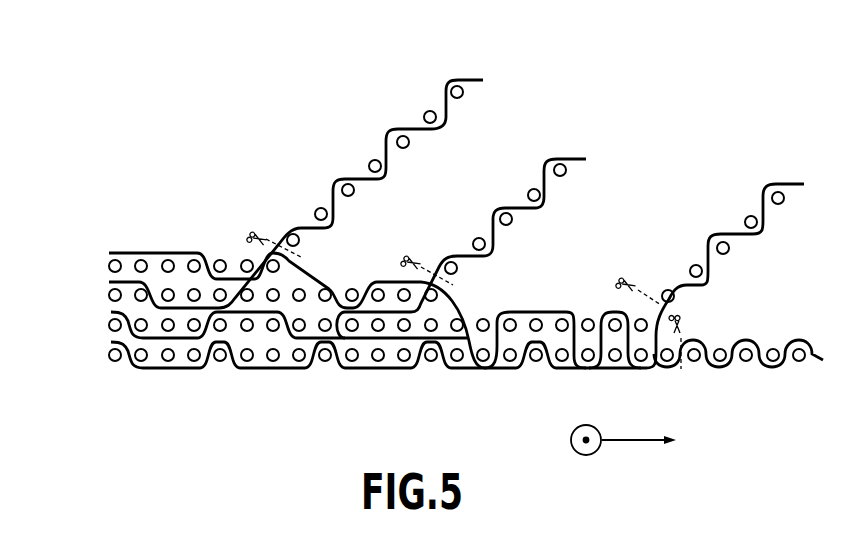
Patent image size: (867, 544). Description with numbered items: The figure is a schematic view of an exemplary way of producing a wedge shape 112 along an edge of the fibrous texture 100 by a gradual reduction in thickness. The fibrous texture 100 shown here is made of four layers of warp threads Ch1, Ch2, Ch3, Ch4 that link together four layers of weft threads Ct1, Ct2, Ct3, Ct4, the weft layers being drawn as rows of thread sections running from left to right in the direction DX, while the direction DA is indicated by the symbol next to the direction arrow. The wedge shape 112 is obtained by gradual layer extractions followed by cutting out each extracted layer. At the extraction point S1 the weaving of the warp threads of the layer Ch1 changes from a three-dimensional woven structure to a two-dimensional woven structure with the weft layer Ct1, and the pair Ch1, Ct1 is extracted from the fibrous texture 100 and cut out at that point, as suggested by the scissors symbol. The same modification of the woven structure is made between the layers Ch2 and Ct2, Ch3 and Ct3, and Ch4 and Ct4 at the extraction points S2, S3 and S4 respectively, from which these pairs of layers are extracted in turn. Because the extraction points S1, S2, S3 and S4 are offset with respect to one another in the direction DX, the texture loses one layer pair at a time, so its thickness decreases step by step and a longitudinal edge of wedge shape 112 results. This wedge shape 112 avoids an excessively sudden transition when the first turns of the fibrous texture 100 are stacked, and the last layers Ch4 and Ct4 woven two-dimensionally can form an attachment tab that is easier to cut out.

The fibrous texture 100 is at (422, 203).
The wedge shape 112 is at (364, 150).
The layer of weft threads Ct1 is at (96, 266).
The layer of weft threads Ct2 is at (96, 296).
The layer of weft threads Ct3 is at (96, 326).
The layer of weft threads Ct4 is at (96, 357).
The layer of warp threads Ch1 is at (470, 74).
The layer of warp threads Ch2 is at (570, 154).
The layer of warp threads Ch3 is at (788, 182).
The layer of warp threads Ch4 is at (818, 340).
The extraction point S1 is at (273, 229).
The extraction point S2 is at (429, 251).
The extraction point S3 is at (645, 274).
The extraction point S4 is at (702, 328).
The axial direction DA is at (571, 440).
The direction DX is at (655, 443).